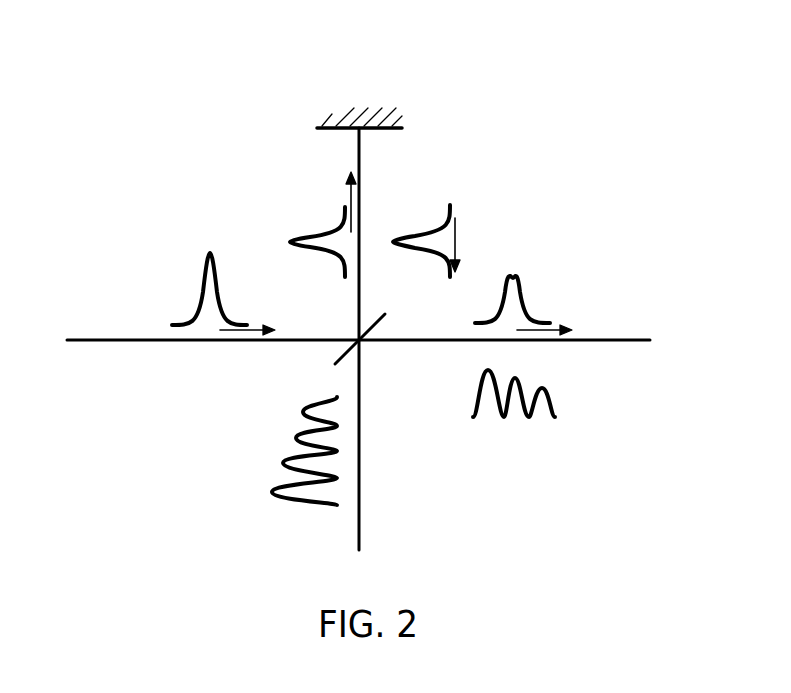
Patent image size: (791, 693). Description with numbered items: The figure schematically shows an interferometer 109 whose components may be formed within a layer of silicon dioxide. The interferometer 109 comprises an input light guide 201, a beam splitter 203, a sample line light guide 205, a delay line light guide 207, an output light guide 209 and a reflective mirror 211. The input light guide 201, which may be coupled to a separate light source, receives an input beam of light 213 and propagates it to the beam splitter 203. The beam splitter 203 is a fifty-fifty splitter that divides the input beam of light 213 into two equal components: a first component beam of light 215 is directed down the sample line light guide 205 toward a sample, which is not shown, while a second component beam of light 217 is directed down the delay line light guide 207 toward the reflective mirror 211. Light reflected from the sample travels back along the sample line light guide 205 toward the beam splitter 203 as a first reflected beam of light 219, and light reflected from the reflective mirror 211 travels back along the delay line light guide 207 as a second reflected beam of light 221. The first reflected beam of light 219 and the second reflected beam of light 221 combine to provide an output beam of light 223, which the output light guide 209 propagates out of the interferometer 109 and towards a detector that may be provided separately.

The interferometer 109 is at (388, 78).
The input light guide 201 is at (187, 341).
The beam splitter 203 is at (378, 319).
The sample line light guide 205 is at (585, 341).
The delay line light guide 207 is at (362, 182).
The output light guide 209 is at (362, 470).
The reflective mirror 211 is at (400, 119).
The input beam of light 213 is at (204, 273).
The first component beam of light 215 is at (521, 296).
The second component beam of light 217 is at (312, 236).
The first reflected beam of light 219 is at (430, 436).
The second reflected beam of light 221 is at (463, 222).
The output beam of light 223 is at (300, 499).